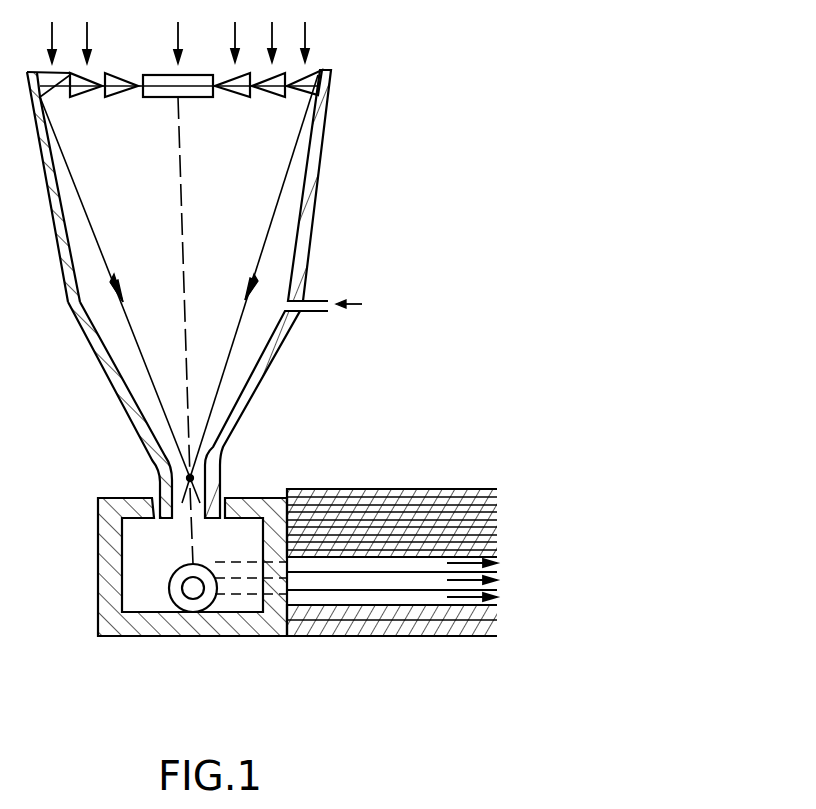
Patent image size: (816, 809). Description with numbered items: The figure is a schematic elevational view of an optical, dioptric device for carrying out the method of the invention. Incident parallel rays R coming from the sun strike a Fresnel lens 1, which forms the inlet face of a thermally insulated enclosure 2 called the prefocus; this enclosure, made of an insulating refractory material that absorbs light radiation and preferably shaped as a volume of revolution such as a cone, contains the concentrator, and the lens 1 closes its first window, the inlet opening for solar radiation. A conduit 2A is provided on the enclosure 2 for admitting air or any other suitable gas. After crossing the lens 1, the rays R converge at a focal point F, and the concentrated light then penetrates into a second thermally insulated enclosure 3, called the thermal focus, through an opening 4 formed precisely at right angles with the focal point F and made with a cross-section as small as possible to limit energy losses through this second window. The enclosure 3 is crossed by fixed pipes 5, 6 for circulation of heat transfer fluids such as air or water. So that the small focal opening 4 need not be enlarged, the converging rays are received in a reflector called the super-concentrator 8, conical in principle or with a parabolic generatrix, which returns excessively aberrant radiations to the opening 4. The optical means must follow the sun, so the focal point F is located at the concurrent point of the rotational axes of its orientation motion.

The Fresnel lens 1 is at (272, 88).
The thermally insulated enclosure 2 is at (314, 186).
The conduit 2A is at (313, 312).
The thermally insulated enclosure 3 is at (108, 563).
The opening 4 is at (182, 487).
The pipe 5 is at (191, 612).
The pipe 6 is at (203, 594).
The super-concentrator 8 is at (213, 483).
The focal point F is at (170, 474).
The incident parallel rays R is at (186, 42).